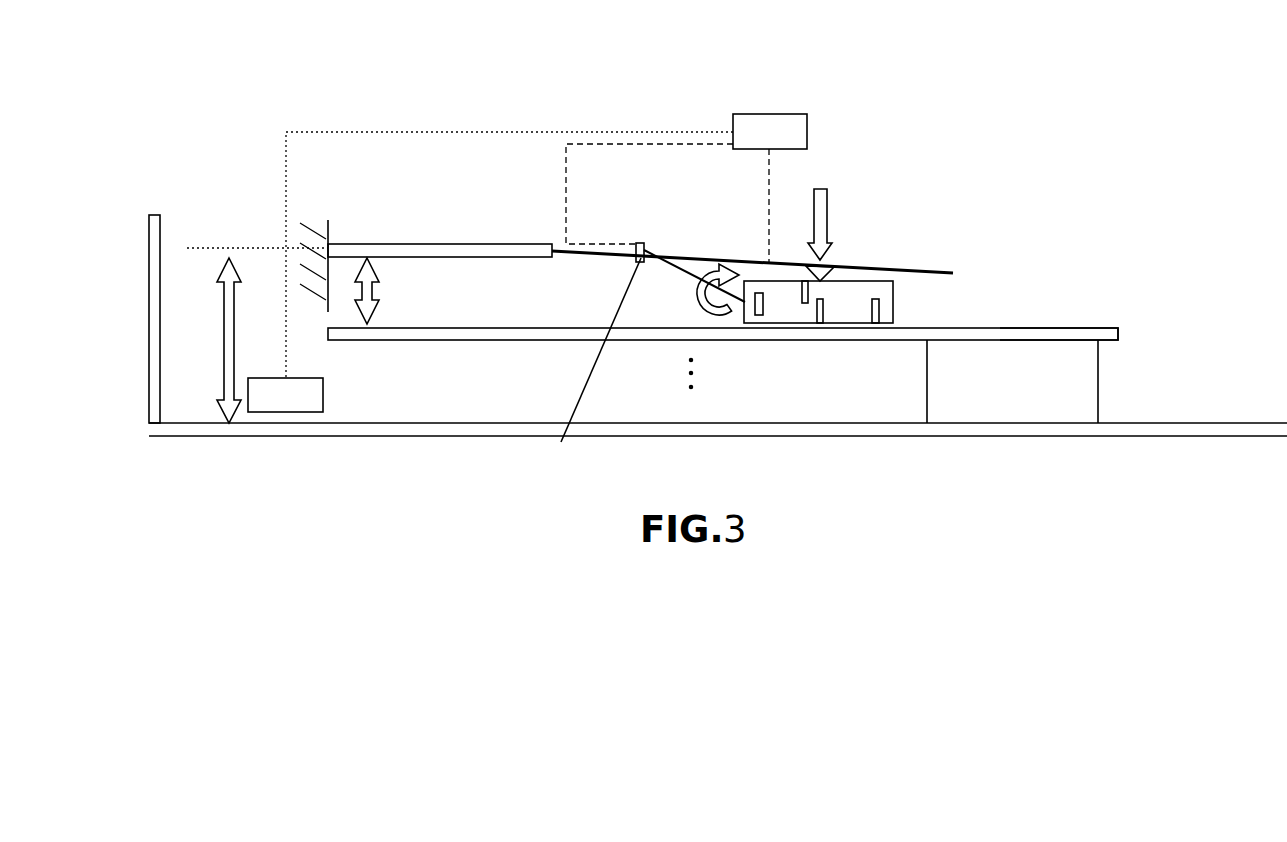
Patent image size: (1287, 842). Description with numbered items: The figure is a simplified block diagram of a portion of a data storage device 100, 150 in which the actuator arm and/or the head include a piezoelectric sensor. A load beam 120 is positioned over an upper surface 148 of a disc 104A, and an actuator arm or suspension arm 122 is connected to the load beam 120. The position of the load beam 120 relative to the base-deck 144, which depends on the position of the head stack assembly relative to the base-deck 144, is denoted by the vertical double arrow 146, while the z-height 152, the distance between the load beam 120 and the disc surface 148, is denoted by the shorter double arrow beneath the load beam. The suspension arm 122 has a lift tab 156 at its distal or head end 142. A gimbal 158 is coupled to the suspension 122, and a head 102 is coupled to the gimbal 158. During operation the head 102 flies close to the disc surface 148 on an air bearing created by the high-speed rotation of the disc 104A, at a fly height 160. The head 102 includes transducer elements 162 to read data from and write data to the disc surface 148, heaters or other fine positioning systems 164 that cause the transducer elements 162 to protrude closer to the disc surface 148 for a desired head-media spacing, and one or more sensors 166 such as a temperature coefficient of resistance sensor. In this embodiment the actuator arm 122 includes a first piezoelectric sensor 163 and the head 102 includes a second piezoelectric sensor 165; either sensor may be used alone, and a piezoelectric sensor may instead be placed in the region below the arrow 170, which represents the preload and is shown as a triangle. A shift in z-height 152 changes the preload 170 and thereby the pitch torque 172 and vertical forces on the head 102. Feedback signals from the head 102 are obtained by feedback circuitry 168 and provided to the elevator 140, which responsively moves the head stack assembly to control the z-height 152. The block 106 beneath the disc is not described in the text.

The data storage device 100 is at (667, 233).
The data storage device 150 is at (1148, 68).
The head 102 is at (897, 293).
The disc 104A is at (1118, 335).
The support block 106 is at (1087, 408).
The load beam 120 is at (518, 250).
The actuator arm 122 is at (694, 240).
The elevator 140 is at (315, 397).
The distal head end 142 is at (890, 237).
The base-deck 144 is at (813, 432).
The position of load beam relative to base-deck 146 is at (229, 358).
The upper surface of disc 148 is at (456, 327).
The z-height 152 is at (370, 272).
The lift tab 156 is at (943, 270).
The gimbal 158 is at (673, 258).
The fly height 160 is at (918, 316).
The transducer elements 162 is at (805, 303).
The first piezoelectric sensor 163 is at (597, 363).
The heaters or fine positioning systems 164 is at (819, 323).
The second piezoelectric sensor 165 is at (757, 312).
The sensors 166 is at (876, 323).
The feedback circuitry 168 is at (803, 127).
The preload 170 is at (823, 222).
The pitch torque 172 is at (702, 297).